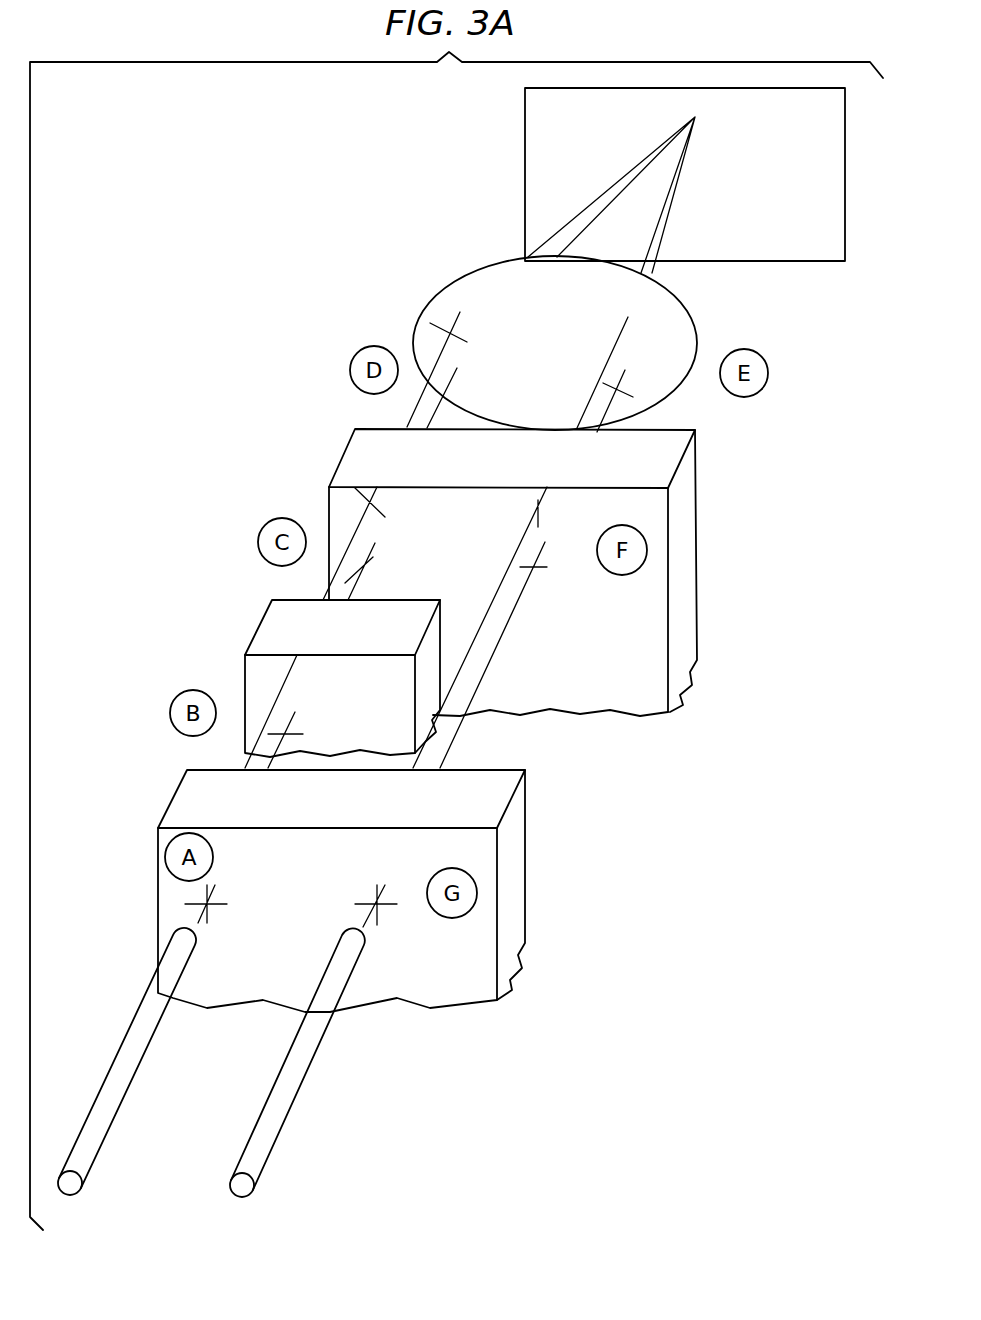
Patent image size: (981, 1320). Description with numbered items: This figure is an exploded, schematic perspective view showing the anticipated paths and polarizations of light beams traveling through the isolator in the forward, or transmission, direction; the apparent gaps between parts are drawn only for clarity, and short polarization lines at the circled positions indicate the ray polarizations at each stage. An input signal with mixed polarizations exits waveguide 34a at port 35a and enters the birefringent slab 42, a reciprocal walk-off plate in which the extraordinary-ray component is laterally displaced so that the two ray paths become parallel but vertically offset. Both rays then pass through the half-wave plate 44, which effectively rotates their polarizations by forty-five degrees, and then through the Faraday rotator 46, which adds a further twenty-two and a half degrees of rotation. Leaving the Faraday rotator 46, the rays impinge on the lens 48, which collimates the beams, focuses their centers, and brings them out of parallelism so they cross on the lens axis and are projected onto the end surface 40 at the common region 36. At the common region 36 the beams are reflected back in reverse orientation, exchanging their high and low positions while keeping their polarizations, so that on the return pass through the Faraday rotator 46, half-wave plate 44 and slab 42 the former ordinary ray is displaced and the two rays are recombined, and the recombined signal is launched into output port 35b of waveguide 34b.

The waveguide 34a is at (120, 1052).
The waveguide 34b is at (291, 1052).
The port 35a is at (195, 934).
The output port 35b is at (364, 934).
The common region 36 is at (698, 117).
The end surface 40 is at (525, 160).
The birefringent slab 42 is at (178, 797).
The half-wave plate 44 is at (268, 624).
The Faraday rotator 46 is at (355, 449).
The lens 48 is at (443, 301).